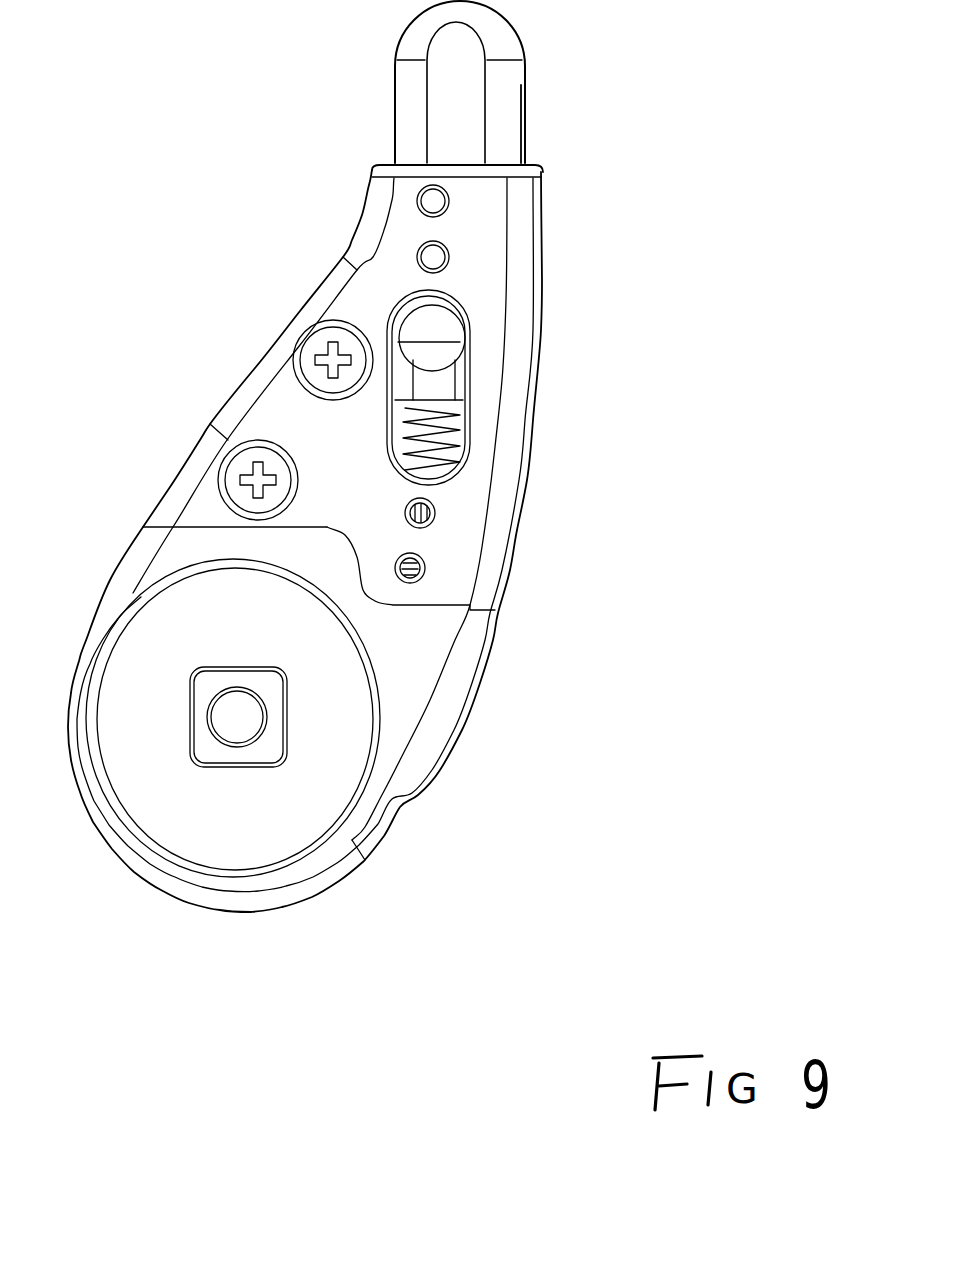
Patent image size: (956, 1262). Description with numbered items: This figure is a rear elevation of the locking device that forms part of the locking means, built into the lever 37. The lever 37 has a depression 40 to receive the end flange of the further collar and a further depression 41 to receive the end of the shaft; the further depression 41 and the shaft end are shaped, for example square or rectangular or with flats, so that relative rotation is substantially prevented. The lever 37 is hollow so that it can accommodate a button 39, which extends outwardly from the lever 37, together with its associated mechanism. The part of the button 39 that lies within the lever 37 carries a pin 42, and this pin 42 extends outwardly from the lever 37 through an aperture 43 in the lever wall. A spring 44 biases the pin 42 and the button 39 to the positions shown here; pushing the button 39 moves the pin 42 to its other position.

The lever 37 is at (507, 530).
The button 39 is at (521, 97).
The depression 40 is at (272, 838).
The further depression 41 is at (247, 713).
The pin 42 is at (445, 352).
The aperture 43 is at (458, 385).
The spring 44 is at (455, 440).